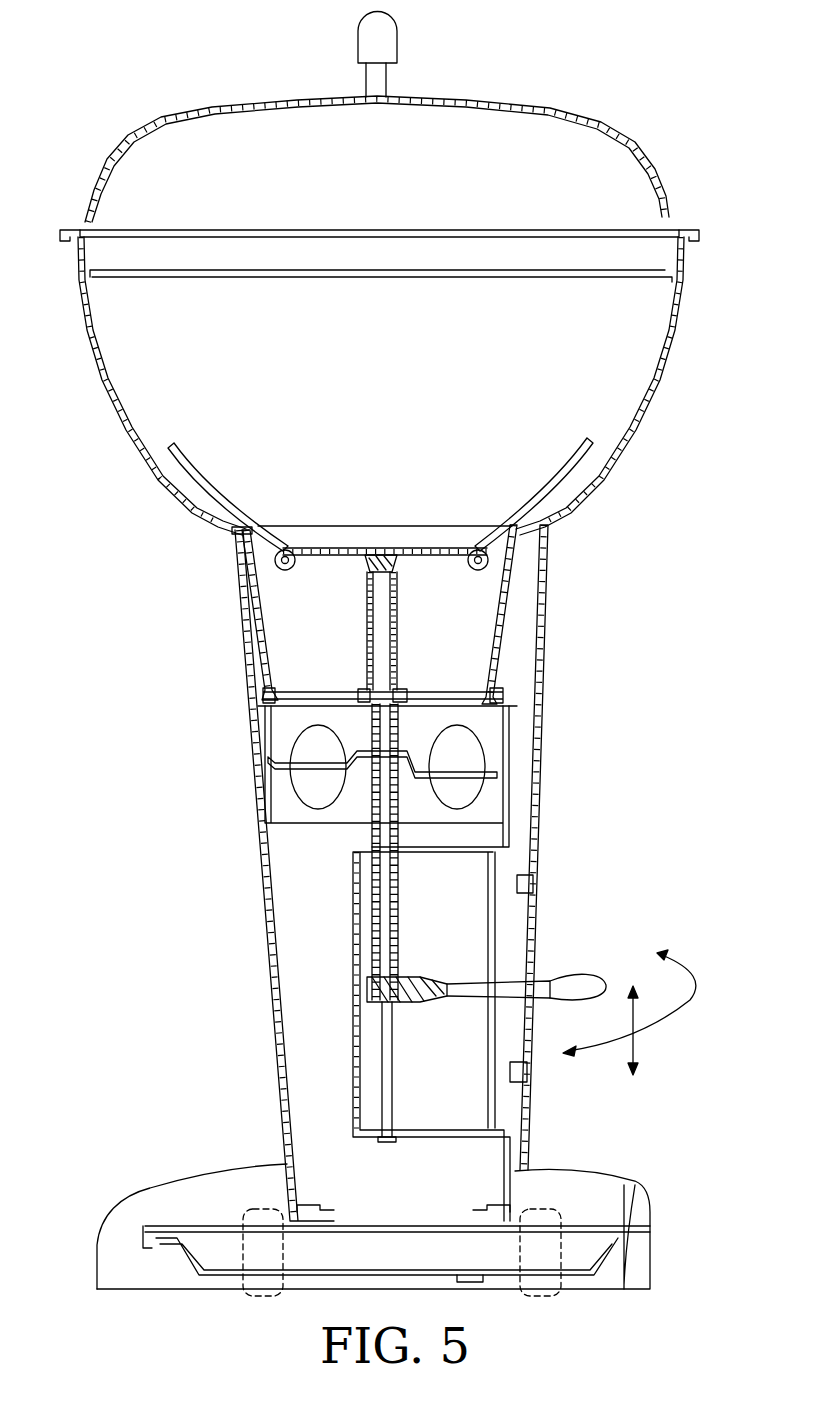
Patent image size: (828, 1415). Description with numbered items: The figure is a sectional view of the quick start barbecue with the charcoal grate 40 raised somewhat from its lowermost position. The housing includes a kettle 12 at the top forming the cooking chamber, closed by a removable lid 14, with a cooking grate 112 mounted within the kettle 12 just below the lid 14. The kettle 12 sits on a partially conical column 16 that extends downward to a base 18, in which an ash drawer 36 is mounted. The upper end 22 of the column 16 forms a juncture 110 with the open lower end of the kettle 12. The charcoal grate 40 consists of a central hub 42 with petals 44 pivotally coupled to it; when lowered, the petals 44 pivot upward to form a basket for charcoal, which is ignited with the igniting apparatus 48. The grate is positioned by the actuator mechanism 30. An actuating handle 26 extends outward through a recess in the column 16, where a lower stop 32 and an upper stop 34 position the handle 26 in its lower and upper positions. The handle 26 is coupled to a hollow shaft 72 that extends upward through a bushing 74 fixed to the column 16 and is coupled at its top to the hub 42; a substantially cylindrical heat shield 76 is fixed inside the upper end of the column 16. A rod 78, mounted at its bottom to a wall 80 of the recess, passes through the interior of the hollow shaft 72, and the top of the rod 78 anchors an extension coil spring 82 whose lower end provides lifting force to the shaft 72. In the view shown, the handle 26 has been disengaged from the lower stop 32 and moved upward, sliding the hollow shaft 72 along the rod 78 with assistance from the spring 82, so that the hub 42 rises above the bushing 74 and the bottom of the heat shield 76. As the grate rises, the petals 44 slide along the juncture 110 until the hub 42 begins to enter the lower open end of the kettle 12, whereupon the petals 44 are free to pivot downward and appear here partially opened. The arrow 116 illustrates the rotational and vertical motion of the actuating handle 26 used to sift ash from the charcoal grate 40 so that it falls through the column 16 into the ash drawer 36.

The kettle 12 is at (635, 427).
The removable lid 14 is at (636, 147).
The column 16 is at (268, 980).
The base 18 is at (150, 1191).
The upper end of the column 22 is at (237, 558).
The actuating handle 26 is at (588, 988).
The actuator mechanism 30 is at (400, 933).
The lower stop 32 is at (527, 1077).
The upper stop 34 is at (533, 882).
The ash drawer 36 is at (650, 1235).
The charcoal grate 40 is at (363, 568).
The central hub 42 is at (397, 563).
The petals 44 is at (200, 473).
The igniting apparatus 48 is at (277, 783).
The hollow shaft 72 is at (395, 667).
The bushing 74 is at (363, 690).
The heat shield 76 is at (517, 610).
The rod 78 is at (393, 1052).
The wall of the recess 80 is at (433, 1135).
The extension coil spring 82 is at (397, 898).
The juncture 110 is at (234, 531).
The cooking grate 112 is at (439, 277).
The arrow 116 is at (640, 1043).